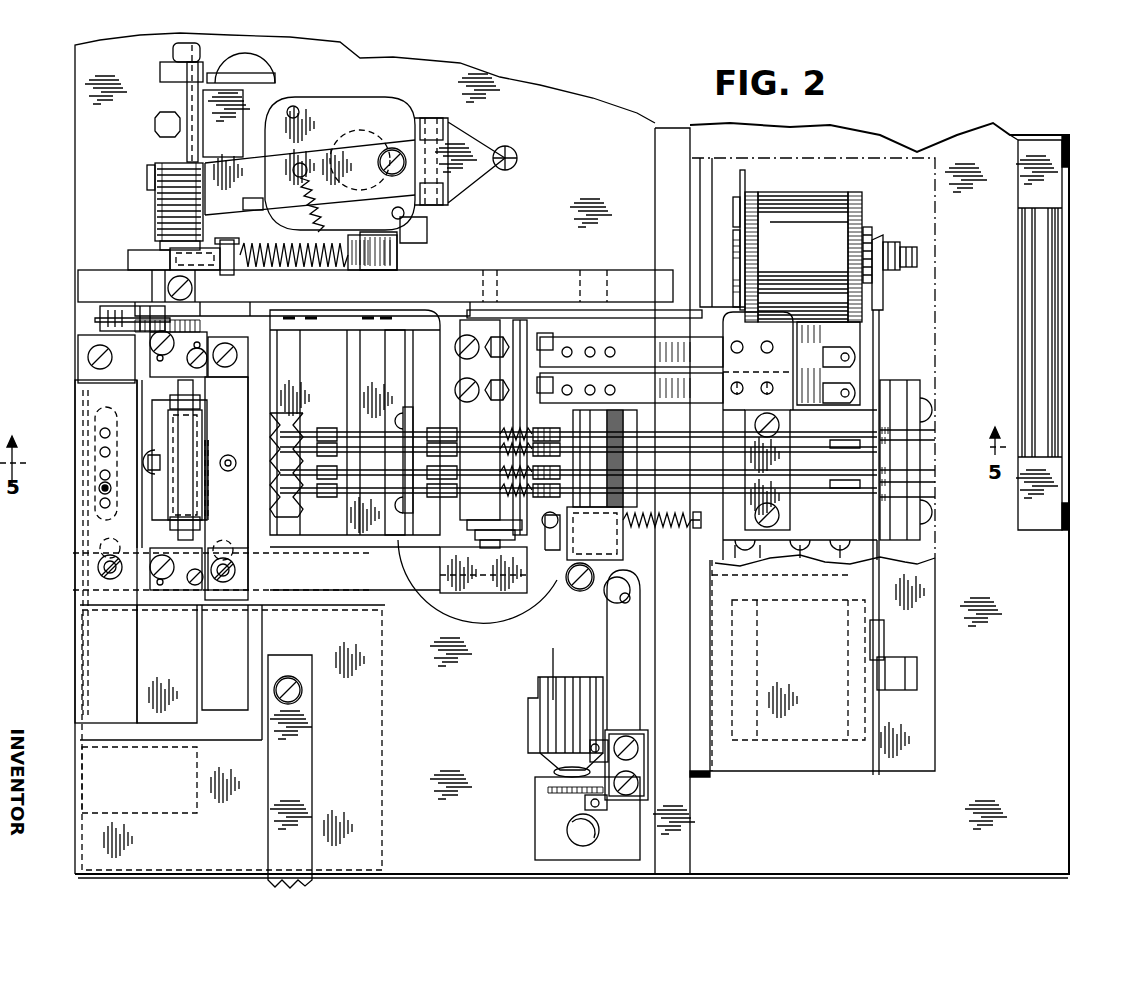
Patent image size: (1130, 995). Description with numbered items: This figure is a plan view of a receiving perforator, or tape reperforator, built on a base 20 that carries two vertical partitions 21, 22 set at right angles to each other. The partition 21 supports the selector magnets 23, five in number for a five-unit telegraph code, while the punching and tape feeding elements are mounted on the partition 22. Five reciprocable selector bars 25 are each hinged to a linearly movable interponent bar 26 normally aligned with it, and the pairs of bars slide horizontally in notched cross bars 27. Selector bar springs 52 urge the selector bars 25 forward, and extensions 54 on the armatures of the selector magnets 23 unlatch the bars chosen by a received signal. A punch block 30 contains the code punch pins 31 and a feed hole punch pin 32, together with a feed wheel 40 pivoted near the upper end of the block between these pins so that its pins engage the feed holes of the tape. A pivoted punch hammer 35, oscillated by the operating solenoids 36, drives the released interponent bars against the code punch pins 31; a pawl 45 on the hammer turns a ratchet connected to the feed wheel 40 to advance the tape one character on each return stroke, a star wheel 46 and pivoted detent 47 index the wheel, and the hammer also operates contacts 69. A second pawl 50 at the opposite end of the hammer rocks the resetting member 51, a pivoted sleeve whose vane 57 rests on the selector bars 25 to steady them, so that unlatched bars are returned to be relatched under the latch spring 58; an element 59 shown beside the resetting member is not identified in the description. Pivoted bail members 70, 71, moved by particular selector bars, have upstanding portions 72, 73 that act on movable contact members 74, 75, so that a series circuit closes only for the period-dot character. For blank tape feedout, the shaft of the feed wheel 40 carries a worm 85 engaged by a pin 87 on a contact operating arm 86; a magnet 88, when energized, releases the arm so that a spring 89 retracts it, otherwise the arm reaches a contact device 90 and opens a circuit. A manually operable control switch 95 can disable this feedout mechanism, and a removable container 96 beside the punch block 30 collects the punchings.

The base 20 is at (1072, 720).
The vertical partition 21 is at (683, 840).
The vertical partition 22 is at (553, 270).
The selector magnets 23 is at (788, 197).
The selector bars 25 is at (800, 440).
The interponent bar 26 is at (366, 434).
The cross bars 27 is at (412, 382).
The punch block 30 is at (78, 357).
The code punch pins 31 is at (100, 503).
The feed hole punch pin 32 is at (222, 465).
The punch hammer 35 is at (400, 536).
The operating solenoids 36 is at (496, 621).
The feed wheel 40 is at (150, 497).
The pawl 45 is at (95, 321).
The star wheel 46 is at (128, 262).
The detent 47 is at (215, 250).
The second pawl 50 is at (640, 556).
The resetting member 51 is at (600, 428).
The selector bar springs 52 is at (445, 538).
The armature extensions 54 is at (879, 376).
The vane 57 is at (637, 462).
The latch spring 58 is at (935, 497).
The spring 59 is at (650, 526).
The contacts 69 is at (608, 647).
The bail member 70 is at (503, 540).
The bail member 71 is at (508, 526).
The upstanding portion 72 is at (580, 343).
The upstanding portion 73 is at (535, 395).
The movable contact member 74 is at (655, 345).
The movable contact member 75 is at (622, 388).
The worm 85 is at (160, 215).
The contact operating arm 86 is at (245, 178).
The pin 87 is at (158, 165).
The magnet 88 is at (328, 100).
The spring 89 is at (305, 207).
The contact device 90 is at (170, 125).
The manually operable control switch 95 is at (560, 828).
The removable container 96 is at (378, 733).